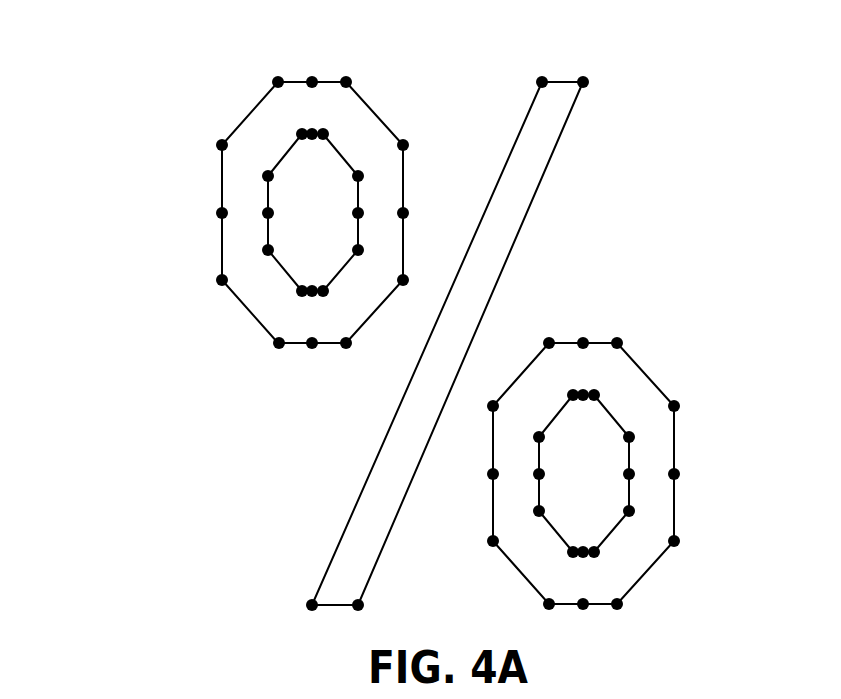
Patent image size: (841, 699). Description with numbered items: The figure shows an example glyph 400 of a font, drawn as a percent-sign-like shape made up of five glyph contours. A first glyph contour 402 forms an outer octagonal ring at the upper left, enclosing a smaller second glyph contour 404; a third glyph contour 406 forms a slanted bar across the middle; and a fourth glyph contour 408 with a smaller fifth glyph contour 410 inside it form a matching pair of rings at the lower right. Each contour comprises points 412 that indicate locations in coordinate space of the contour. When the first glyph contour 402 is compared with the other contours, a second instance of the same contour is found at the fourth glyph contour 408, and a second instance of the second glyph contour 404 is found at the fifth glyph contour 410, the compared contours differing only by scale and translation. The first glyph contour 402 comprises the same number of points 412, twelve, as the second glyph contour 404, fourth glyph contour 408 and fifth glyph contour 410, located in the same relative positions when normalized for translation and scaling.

The glyph 400 is at (158, 50).
The first glyph contour 402 is at (222, 185).
The second glyph contour 404 is at (343, 158).
The third glyph contour 406 is at (553, 152).
The fourth glyph contour 408 is at (630, 355).
The fifth glyph contour 410 is at (617, 528).
The points 412 is at (279, 343).